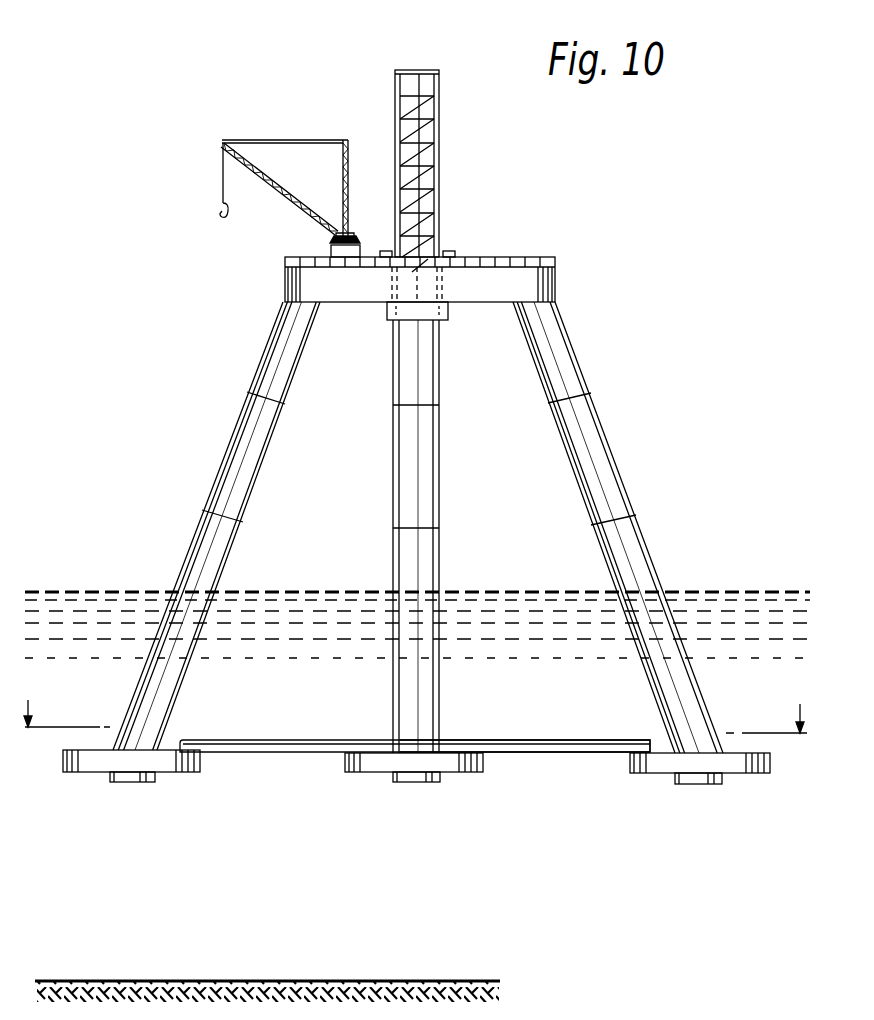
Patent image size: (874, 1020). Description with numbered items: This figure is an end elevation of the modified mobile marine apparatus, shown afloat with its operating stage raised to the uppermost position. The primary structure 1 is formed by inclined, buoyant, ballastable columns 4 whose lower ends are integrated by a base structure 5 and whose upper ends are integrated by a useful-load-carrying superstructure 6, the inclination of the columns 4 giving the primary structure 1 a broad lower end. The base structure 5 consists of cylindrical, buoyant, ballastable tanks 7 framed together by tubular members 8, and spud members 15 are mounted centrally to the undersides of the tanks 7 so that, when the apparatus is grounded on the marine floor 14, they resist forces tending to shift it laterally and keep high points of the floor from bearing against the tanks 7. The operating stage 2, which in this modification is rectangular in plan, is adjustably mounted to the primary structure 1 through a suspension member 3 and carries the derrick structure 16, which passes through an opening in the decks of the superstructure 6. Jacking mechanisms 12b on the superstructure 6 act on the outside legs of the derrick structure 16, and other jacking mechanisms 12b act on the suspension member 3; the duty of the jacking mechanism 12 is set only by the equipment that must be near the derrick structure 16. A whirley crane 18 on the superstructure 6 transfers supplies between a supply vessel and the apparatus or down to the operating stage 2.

The primary structure 1 is at (630, 342).
The operating stage 2 is at (448, 313).
The suspension member 3 is at (418, 113).
The columns 4 is at (243, 401).
The base structure 5 is at (268, 730).
The useful-load-carrying superstructure 6 is at (549, 292).
The tanks 7 is at (200, 766).
The tubular members 8 is at (538, 745).
The jacking mechanism 12 is at (415, 705).
The jacking mechanisms 12b is at (386, 251).
The marine floor 14 is at (210, 980).
The spud members 15 is at (155, 778).
The derrick structure 16 is at (440, 158).
The whirley cranes 18 is at (315, 221).